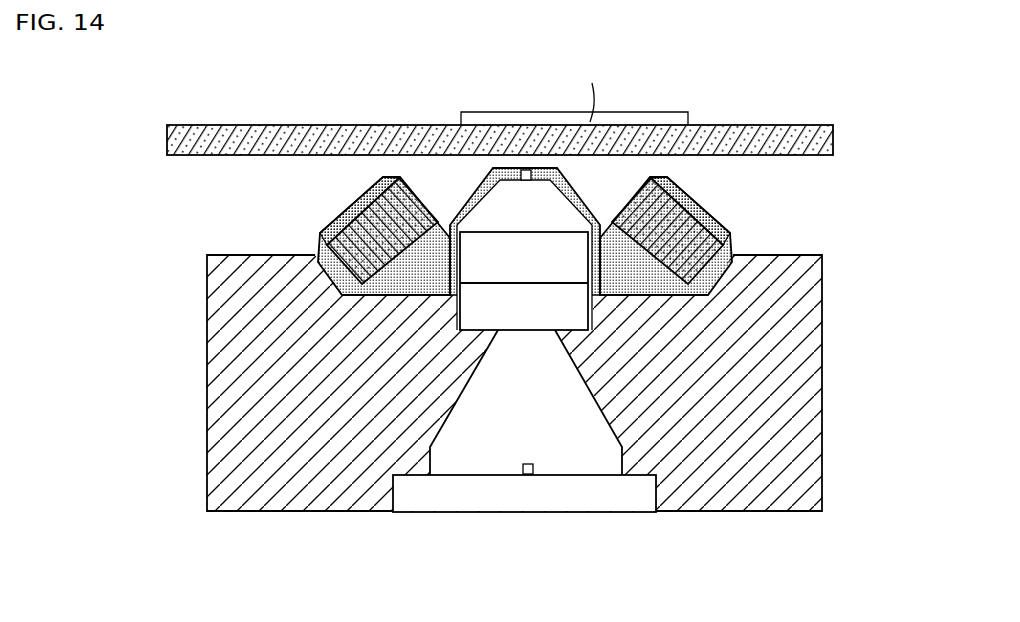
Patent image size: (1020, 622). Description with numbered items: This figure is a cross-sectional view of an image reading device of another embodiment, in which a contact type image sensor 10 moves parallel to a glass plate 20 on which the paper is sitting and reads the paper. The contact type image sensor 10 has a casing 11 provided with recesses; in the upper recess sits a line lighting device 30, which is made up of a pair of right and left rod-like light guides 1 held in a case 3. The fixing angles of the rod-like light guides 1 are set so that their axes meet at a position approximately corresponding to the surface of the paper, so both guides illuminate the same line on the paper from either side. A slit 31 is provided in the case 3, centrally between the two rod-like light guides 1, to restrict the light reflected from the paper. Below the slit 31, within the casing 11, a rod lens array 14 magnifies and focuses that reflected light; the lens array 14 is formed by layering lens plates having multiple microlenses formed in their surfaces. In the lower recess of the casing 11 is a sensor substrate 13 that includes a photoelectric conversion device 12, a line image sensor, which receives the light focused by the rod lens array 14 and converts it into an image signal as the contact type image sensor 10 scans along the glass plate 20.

The rod-like light guide 1 is at (358, 215).
The case 3 is at (710, 223).
The contact type image sensor 10 is at (532, 322).
The casing 11 is at (807, 373).
The photoelectric conversion device 12 is at (528, 462).
The sensor substrate 13 is at (542, 497).
The rod lens array 14 is at (529, 318).
The glass plate 20 is at (343, 128).
The line lighting device 30 is at (537, 202).
The slit 31 is at (524, 170).